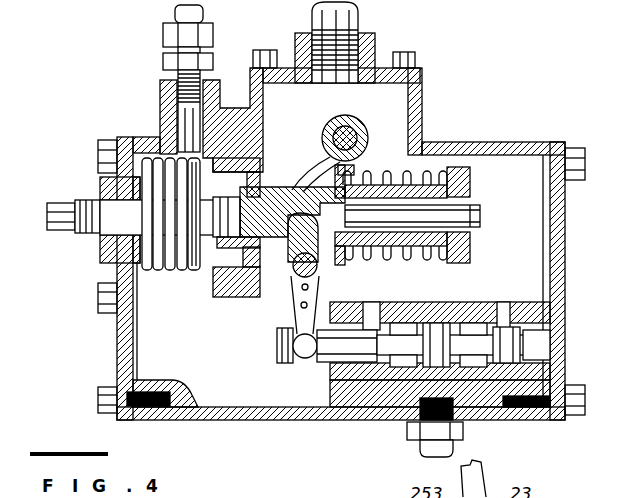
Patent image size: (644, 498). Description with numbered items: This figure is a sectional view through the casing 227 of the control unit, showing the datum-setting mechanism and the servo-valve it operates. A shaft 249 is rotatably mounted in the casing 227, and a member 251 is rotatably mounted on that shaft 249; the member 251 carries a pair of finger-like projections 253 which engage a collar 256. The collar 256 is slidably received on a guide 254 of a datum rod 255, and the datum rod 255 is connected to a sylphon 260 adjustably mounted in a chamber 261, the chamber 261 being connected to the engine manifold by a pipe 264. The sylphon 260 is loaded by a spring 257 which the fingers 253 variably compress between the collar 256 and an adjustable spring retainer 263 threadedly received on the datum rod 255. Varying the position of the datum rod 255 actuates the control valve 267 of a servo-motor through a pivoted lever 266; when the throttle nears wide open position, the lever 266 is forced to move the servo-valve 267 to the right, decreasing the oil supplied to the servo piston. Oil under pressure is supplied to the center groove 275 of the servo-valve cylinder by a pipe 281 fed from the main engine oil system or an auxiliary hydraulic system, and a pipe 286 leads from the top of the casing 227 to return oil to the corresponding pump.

The casing 227 is at (468, 143).
The shaft 249 is at (352, 133).
The member 251 is at (336, 118).
The finger-like projections 253 is at (313, 156).
The guide 254 is at (275, 190).
The datum rod 255 is at (270, 295).
The collar 256 is at (330, 167).
The spring 257 is at (385, 264).
The sylphon 260 is at (157, 272).
The chamber 261 is at (192, 283).
The adjustable spring retainer 263 is at (472, 244).
The pipe 264 is at (205, 14).
The pivoted lever 266 is at (319, 291).
The control valve 267 is at (280, 362).
The center groove 275 is at (438, 323).
The pipe 281 is at (430, 450).
The pipe 286 is at (360, 14).